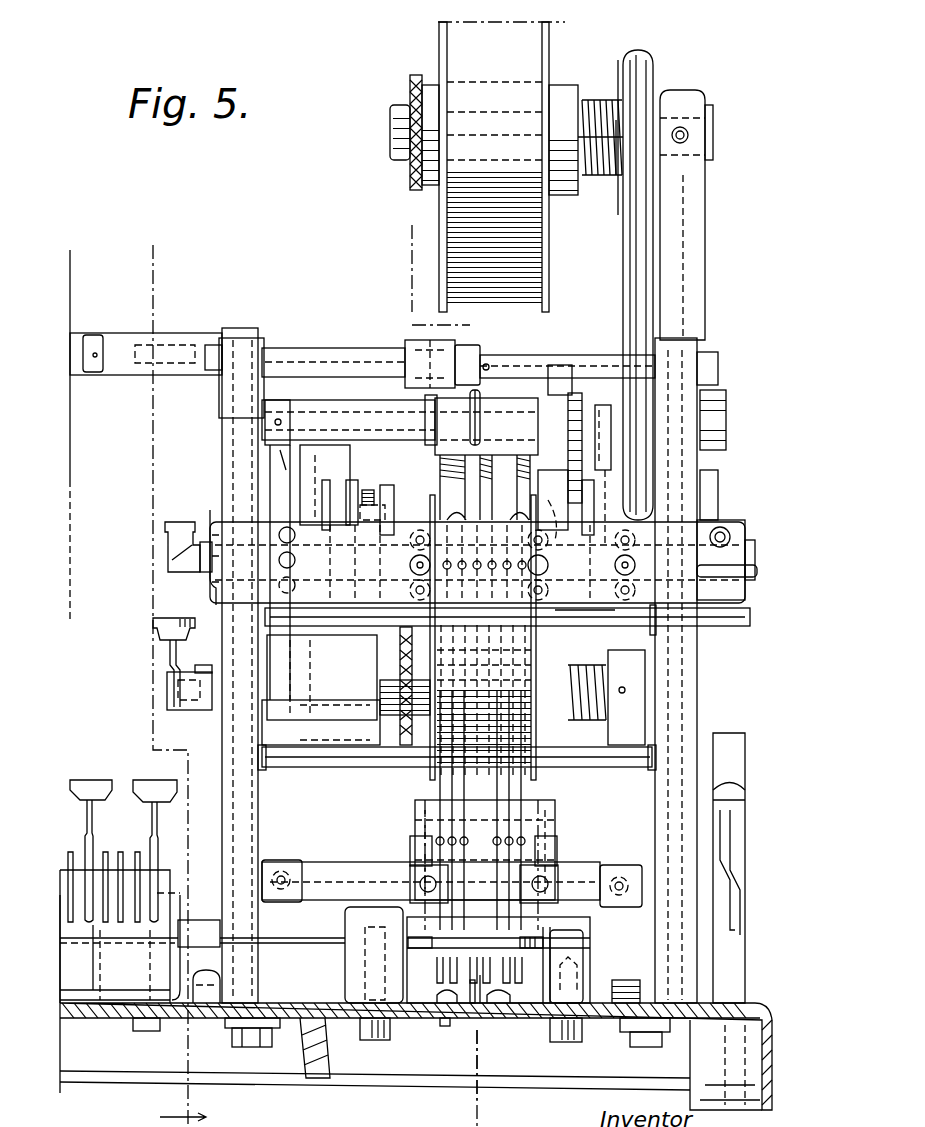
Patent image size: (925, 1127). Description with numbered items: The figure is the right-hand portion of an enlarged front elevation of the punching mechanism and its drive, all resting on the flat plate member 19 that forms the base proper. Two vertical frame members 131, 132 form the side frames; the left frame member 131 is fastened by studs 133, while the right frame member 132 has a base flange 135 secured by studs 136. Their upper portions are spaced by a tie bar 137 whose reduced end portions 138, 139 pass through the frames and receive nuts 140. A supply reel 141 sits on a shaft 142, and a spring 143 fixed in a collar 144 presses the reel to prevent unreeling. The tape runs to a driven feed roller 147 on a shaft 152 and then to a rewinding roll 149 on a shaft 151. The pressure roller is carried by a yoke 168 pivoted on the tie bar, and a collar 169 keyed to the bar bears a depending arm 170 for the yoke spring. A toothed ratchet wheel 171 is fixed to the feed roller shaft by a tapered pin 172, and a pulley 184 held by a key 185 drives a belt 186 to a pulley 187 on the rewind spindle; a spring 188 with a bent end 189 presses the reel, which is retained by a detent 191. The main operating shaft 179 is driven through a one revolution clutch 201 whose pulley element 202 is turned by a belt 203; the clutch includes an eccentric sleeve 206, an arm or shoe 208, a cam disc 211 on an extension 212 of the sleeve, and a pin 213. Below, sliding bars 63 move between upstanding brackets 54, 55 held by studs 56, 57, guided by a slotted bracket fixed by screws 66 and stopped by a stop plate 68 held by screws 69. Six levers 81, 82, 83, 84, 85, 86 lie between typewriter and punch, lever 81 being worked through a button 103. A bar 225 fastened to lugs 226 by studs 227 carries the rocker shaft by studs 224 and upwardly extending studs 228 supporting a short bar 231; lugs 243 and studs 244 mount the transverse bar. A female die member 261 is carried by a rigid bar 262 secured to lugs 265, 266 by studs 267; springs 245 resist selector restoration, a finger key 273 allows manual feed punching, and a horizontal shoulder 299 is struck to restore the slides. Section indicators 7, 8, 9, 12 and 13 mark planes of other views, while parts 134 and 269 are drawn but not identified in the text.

The section line 7- 7 is at (168, 256).
The section line 8- 8 is at (425, 246).
The section line 9- 9 is at (454, 1078).
The section line 12- 12 is at (78, 1050).
The section line 13- 13 is at (427, 922).
The plate member 19 is at (460, 1028).
The upstanding bracket 54 is at (348, 968).
The upstanding bracket 55 is at (590, 965).
The stud 56 is at (385, 1040).
The stud 57 is at (565, 1042).
The sliding bar 63 is at (490, 960).
The screw 66 is at (530, 940).
The stop plate 68 is at (488, 1025).
The screw 69 is at (428, 1025).
The lever 81 is at (68, 920).
The lever 82 is at (88, 840).
The lever 83 is at (105, 925).
The lever 84 is at (120, 858).
The lever 85 is at (138, 925).
The lever 86 is at (160, 855).
The button 103 is at (100, 340).
The left frame member 131 is at (262, 812).
The right frame member 132 is at (660, 818).
The stud 133 is at (278, 985).
The foot 134 is at (262, 1047).
The base flange 135 is at (638, 985).
The stud 136 is at (645, 1048).
The tie bar 137 is at (330, 358).
The reduced end portion 138 is at (262, 348).
The reduced end portion 139 is at (700, 348).
The nut 140 is at (212, 378).
The supply reel 141 is at (440, 617).
The shaft 142 is at (522, 686).
The spring 143 is at (580, 672).
The collar 144 is at (620, 655).
The driven feed roller 147 is at (435, 412).
The rewinding roll 149 is at (438, 40).
The shaft 151 is at (713, 135).
The shaft 152 is at (345, 420).
The yoke 168 is at (540, 345).
The collar 169 is at (500, 340).
The depending arm 170 is at (480, 428).
The toothed ratchet wheel 171 is at (575, 400).
The tapered pin 172 is at (568, 372).
The main operating shaft 179 is at (745, 560).
The pulley 184 is at (640, 482).
The key 185 is at (610, 415).
The belt 186 is at (623, 268).
The pulley 187 is at (652, 80).
The spring 188 is at (596, 100).
The end 189 is at (618, 170).
The detent 191 is at (398, 108).
The one revolution clutch 201 is at (336, 668).
The pulley element 202 is at (280, 492).
The belt 203 is at (290, 470).
The eccentric sleeve 206 is at (545, 512).
The arm or shoe 208 is at (315, 495).
The cam disc 211 is at (352, 482).
The extension 212 is at (375, 535).
The pin 213 is at (372, 492).
The stud 224 is at (560, 884).
The bar 225 is at (565, 880).
The lug 226 is at (290, 862).
The stud 227 is at (300, 880).
The upwardly extending stud 228 is at (565, 841).
The short bar 231 is at (415, 810).
The lug 243 is at (300, 770).
The stud 244 is at (268, 768).
The spring 245 is at (440, 478).
The female die member 261 is at (560, 578).
The rigid bar 262 is at (566, 502).
The lug 265 is at (345, 590).
The lug 266 is at (526, 692).
The stud 267 is at (222, 567).
The screw 269 is at (620, 580).
The finger key 273 is at (153, 638).
The horizontal shoulder 299 is at (410, 852).